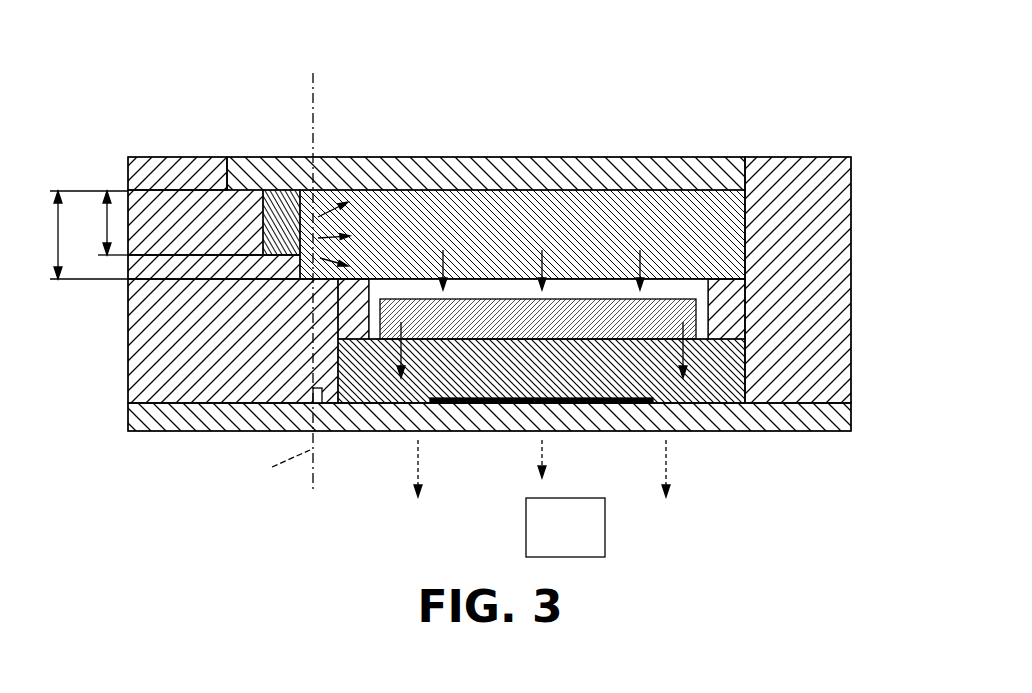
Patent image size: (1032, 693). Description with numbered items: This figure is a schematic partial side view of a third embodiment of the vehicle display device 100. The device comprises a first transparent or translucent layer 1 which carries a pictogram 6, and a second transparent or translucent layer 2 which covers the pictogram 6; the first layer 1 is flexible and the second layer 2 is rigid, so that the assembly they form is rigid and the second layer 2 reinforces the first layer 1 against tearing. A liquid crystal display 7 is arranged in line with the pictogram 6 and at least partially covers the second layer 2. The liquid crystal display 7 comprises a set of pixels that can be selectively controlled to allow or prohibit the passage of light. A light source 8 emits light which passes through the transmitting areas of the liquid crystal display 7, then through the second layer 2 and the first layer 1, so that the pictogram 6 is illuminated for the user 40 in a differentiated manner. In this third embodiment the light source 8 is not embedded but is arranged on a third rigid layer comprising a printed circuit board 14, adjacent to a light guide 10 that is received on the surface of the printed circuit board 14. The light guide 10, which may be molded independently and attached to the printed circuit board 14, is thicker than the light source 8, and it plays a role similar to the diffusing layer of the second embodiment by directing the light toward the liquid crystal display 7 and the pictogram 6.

The vehicle display device 100 is at (506, 112).
The printed circuit board 14 is at (573, 177).
The light guide 10 is at (681, 243).
The light source 8 is at (282, 217).
The liquid crystal display 7 is at (667, 316).
The second transparent or translucent layer 2 is at (712, 360).
The pictogram 6 is at (612, 403).
The first transparent or translucent layer 1 is at (803, 417).
The user 40 is at (565, 527).